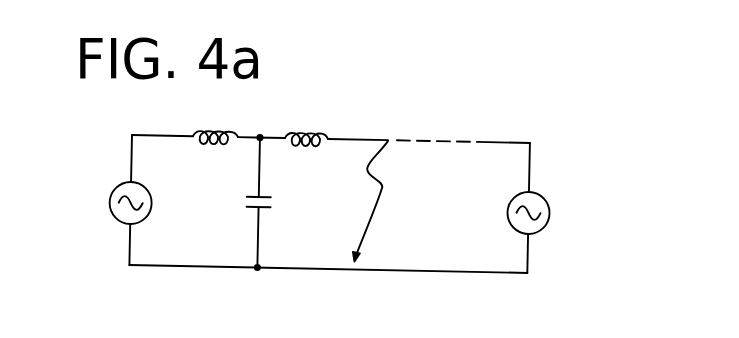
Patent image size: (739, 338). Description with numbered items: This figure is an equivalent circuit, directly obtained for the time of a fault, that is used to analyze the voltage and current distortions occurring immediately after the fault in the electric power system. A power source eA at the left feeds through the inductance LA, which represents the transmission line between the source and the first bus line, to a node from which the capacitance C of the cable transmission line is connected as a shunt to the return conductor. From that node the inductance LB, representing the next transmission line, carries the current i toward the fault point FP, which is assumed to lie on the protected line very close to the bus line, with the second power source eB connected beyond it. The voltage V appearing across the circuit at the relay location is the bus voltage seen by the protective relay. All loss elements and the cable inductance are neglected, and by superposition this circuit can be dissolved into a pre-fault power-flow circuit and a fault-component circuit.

The inductance of the transmission line LA is at (216, 125).
The inductance of the transmission line LB is at (307, 126).
The capacitance of the cable transmission line C is at (268, 202).
The power source eA is at (100, 179).
The power source eB is at (560, 180).
The current i is at (358, 121).
The voltage V is at (338, 150).
The fault point FP is at (376, 201).